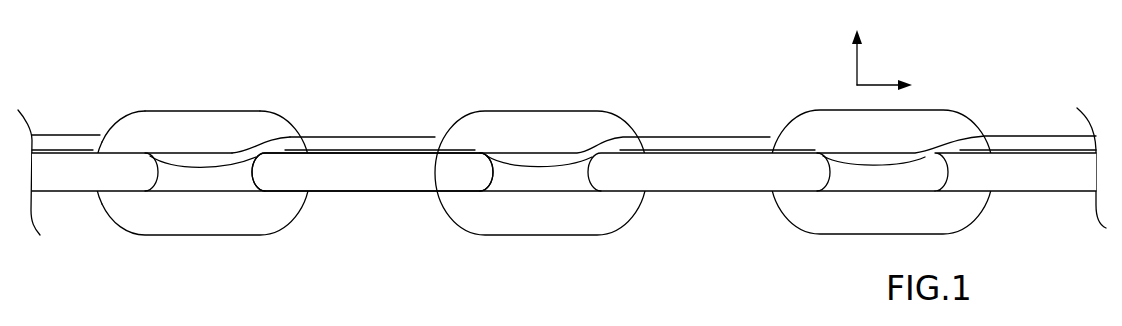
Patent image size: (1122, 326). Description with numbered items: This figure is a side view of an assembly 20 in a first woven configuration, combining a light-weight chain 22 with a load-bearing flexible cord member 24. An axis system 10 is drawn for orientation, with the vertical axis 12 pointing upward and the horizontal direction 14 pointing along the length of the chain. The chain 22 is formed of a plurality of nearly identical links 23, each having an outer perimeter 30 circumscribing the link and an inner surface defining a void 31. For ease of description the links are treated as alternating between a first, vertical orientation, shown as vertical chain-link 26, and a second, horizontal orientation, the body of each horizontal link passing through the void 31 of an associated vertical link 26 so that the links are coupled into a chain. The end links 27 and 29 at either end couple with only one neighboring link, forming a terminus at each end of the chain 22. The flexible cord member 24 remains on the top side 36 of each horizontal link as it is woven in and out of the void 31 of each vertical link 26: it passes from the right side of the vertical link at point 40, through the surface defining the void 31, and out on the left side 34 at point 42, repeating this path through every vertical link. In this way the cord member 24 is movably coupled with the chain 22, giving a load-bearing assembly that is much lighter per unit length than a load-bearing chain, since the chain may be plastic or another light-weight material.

The axis system 10 is at (876, 65).
The vertical axis 12 is at (856, 49).
The horizontal direction 14 is at (894, 84).
The assembly 20 is at (545, 97).
The chain 22 is at (293, 220).
The links 23 is at (708, 193).
The flexible cord member 24 is at (325, 137).
The vertical chain-link 26 is at (220, 112).
The end link 27 is at (63, 195).
The end link 29 is at (1011, 192).
The outer perimeter 30 is at (152, 110).
The surface defining a void 31 is at (178, 150).
The left side 34 is at (213, 145).
The top side 36 is at (377, 153).
The entry point 40 is at (110, 124).
The exit point 42 is at (178, 160).